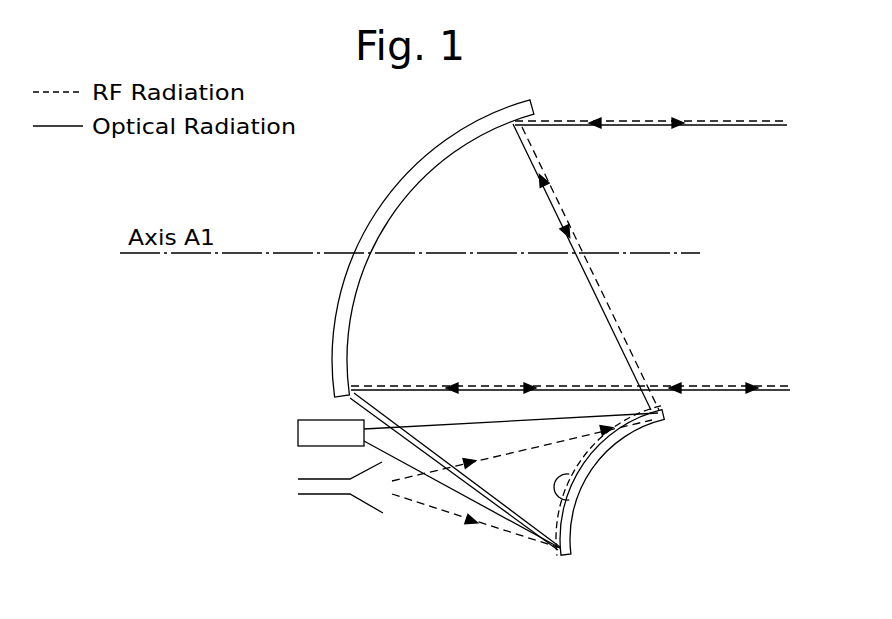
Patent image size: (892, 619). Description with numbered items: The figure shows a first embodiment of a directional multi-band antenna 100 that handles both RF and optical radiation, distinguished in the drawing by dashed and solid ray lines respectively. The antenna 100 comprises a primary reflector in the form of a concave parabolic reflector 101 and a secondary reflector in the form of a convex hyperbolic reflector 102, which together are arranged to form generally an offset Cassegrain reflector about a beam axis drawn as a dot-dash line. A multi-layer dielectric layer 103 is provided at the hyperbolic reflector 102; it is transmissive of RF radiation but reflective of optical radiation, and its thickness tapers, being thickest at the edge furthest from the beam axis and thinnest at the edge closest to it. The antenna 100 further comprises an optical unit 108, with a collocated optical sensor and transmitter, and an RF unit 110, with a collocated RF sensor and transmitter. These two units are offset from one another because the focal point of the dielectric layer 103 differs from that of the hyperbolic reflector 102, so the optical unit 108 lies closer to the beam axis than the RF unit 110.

The directional multi-band antenna 100 is at (688, 202).
The parabolic reflector 101 is at (410, 190).
The hyperbolic reflector 102 is at (628, 430).
The multi-layer dielectric layer 103 is at (562, 502).
The optical unit 108 is at (308, 436).
The RF unit 110 is at (317, 498).